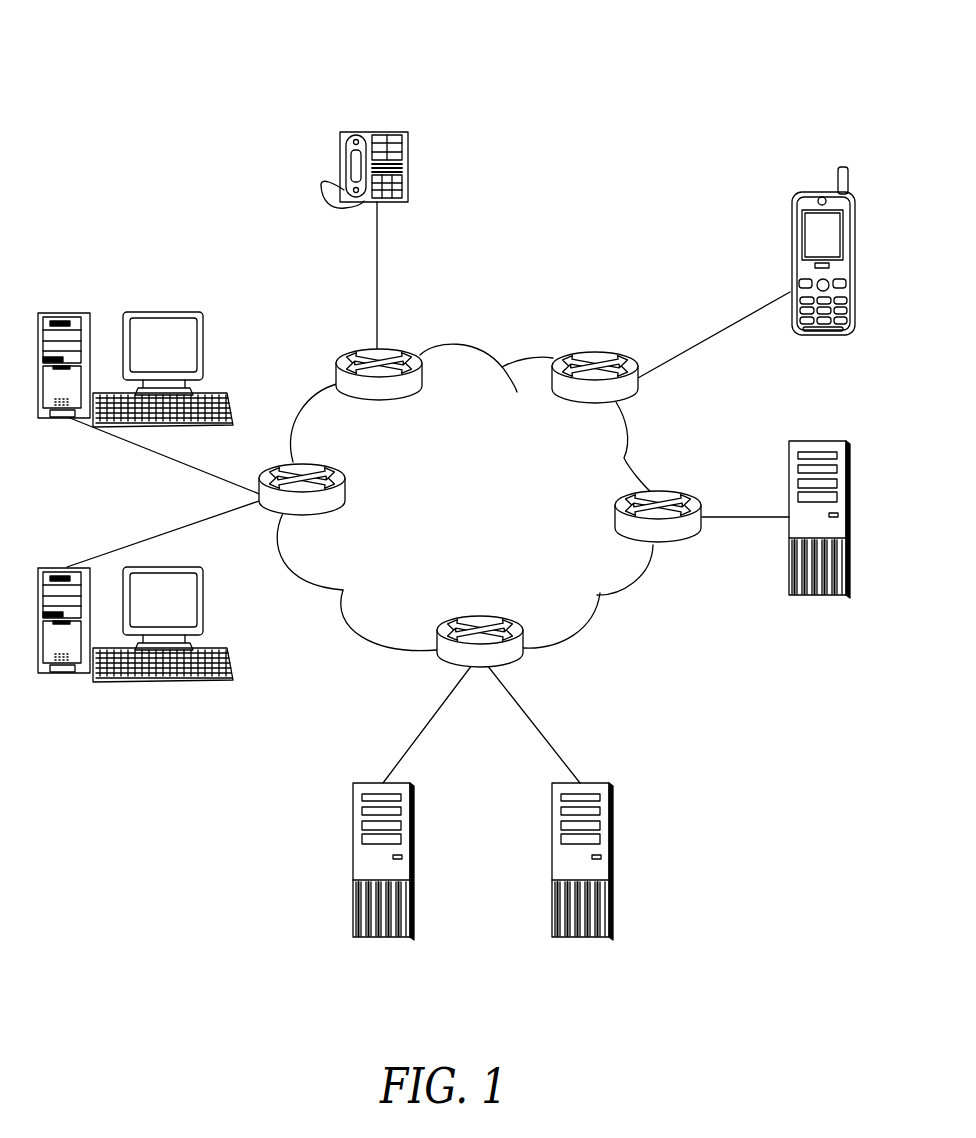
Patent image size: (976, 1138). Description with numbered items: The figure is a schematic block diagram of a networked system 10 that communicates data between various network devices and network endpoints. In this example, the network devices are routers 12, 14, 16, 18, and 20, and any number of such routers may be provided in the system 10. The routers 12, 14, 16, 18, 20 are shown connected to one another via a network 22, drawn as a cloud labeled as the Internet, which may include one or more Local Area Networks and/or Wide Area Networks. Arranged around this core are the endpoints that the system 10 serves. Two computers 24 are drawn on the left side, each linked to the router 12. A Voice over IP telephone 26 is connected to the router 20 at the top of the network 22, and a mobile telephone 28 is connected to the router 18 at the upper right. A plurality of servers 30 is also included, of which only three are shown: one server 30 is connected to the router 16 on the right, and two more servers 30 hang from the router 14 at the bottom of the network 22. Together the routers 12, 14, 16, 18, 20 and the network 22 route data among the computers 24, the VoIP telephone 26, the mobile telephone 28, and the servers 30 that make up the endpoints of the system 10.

The networked system 10 is at (117, 30).
The router 12 is at (272, 467).
The router 14 is at (447, 619).
The router 16 is at (620, 496).
The router 18 is at (587, 353).
The router 20 is at (345, 352).
The network 22 is at (443, 348).
The computer 24 is at (53, 313).
The Voice over IP (VoIP) telephone 26 is at (395, 132).
The mobile telephone 28 is at (805, 192).
The server 30 is at (805, 441).